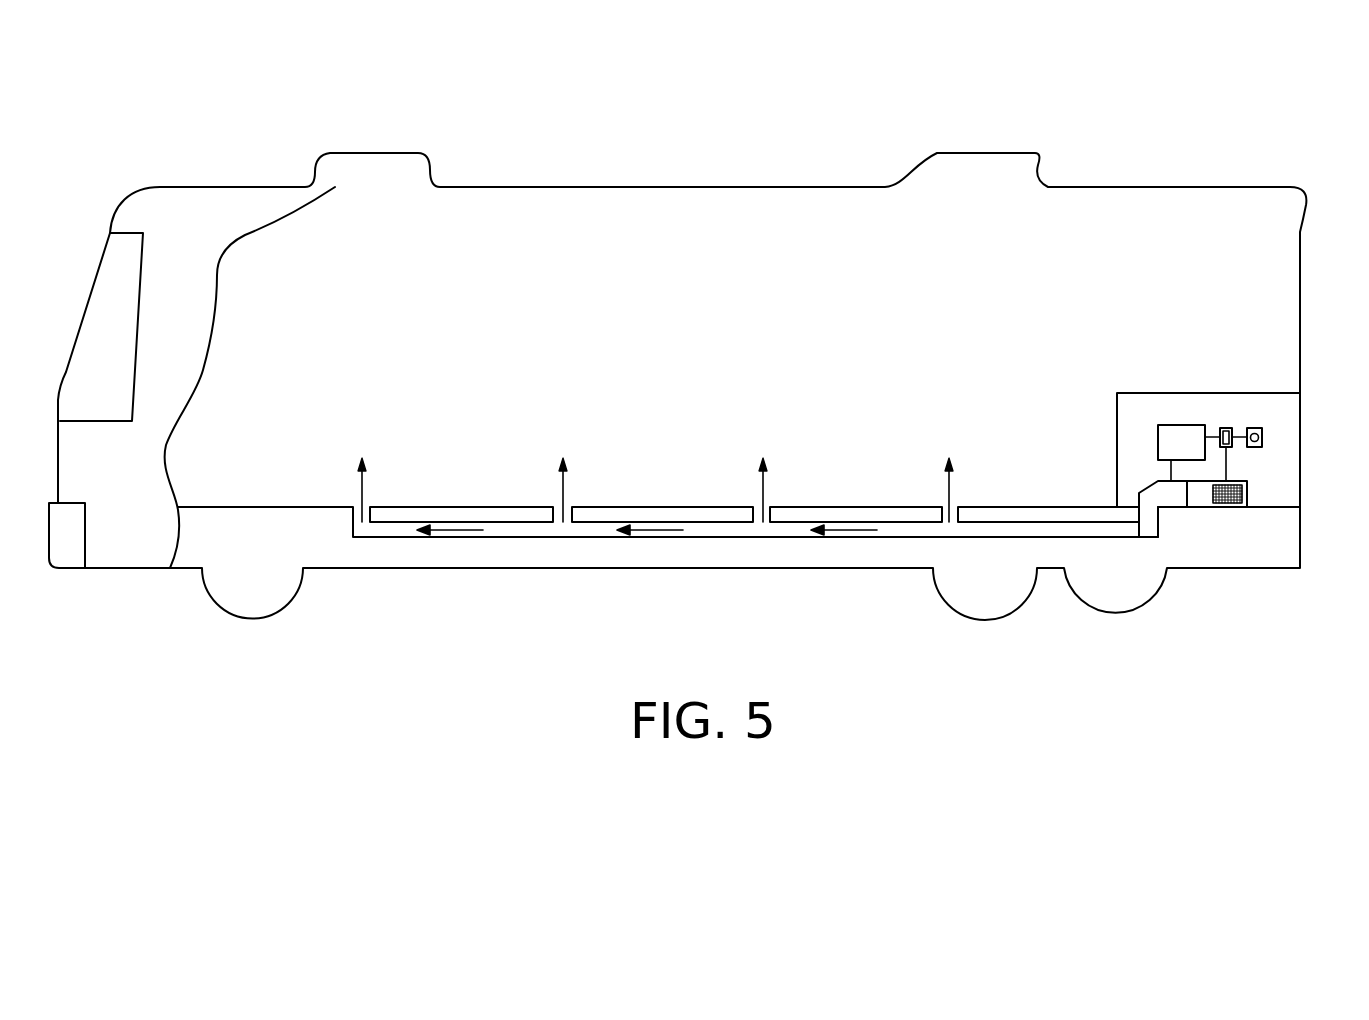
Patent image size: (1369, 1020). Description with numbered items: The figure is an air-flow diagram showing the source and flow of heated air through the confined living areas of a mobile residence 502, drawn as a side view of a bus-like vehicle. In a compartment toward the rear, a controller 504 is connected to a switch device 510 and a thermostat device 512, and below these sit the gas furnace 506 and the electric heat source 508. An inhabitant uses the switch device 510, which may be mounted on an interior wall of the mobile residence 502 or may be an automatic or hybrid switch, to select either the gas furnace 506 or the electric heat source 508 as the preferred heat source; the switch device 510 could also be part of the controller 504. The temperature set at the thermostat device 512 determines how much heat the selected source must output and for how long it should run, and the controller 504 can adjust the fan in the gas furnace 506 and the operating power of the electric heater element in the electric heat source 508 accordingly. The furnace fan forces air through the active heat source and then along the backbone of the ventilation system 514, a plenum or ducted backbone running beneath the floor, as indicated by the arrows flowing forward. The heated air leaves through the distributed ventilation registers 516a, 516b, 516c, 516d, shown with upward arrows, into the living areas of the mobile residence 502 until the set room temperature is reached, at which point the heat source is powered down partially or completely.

The mobile residence 502 is at (213, 185).
The controller 504 is at (1177, 425).
The gas furnace 506 is at (1248, 492).
The electric heat source 508 is at (1170, 495).
The switch device 510 is at (1226, 425).
The thermostat device 512 is at (1254, 425).
The ventilation system 514 is at (707, 537).
The ventilation register 516a is at (358, 503).
The ventilation register 516b is at (558, 503).
The ventilation register 516c is at (757, 503).
The ventilation register 516d is at (943, 503).